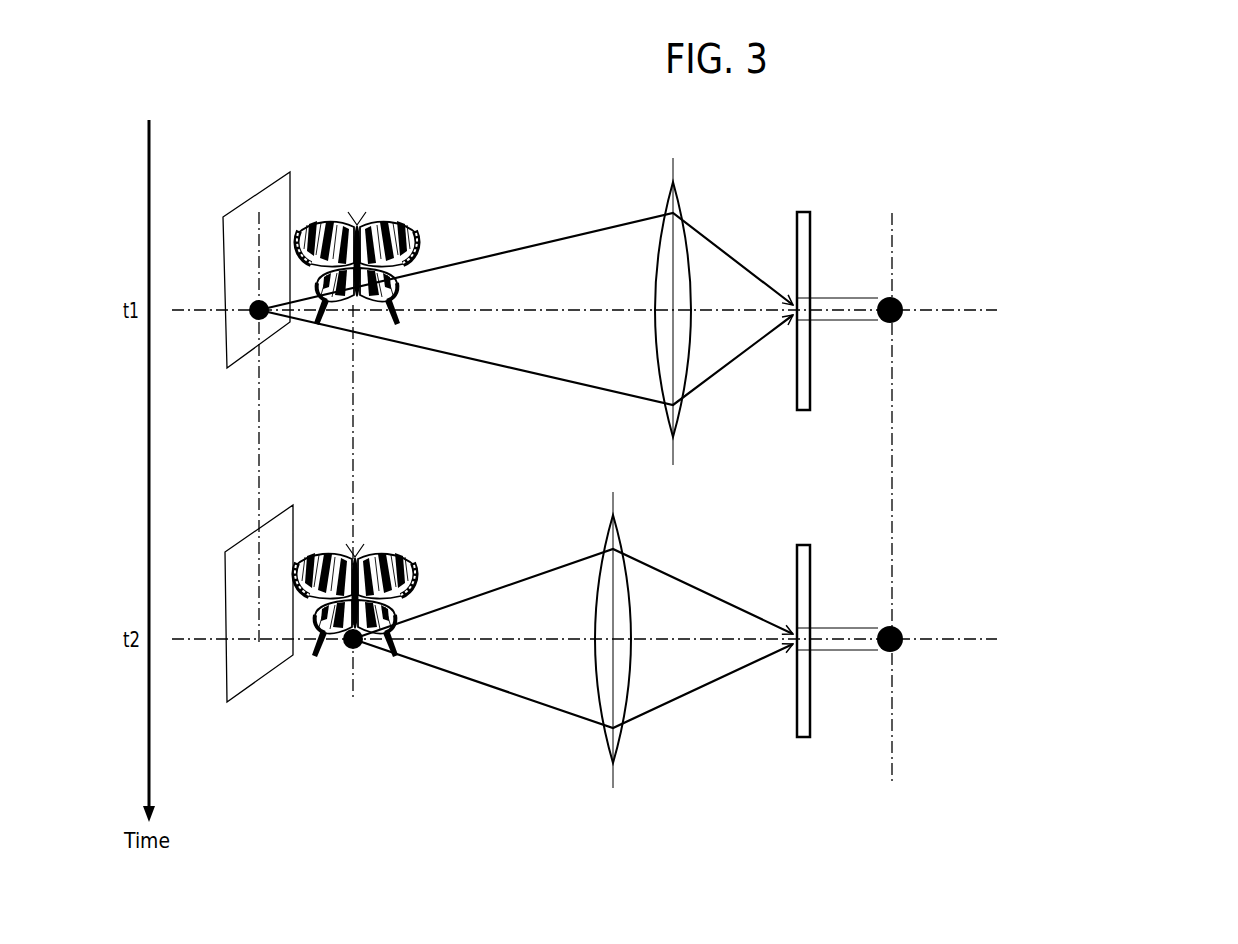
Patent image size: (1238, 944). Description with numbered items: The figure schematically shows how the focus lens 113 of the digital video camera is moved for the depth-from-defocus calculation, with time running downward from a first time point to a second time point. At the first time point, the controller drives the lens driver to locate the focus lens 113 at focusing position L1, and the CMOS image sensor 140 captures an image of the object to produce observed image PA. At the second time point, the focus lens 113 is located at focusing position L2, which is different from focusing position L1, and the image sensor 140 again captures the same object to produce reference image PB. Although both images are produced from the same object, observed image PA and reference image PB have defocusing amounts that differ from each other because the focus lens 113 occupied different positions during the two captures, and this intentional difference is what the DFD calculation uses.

The focus lens 113 is at (651, 470).
The CMOS image sensor 140 is at (802, 210).
The focusing position L1 is at (673, 328).
The focusing position L2 is at (613, 656).
The observed image PA is at (1033, 308).
The reference image PB is at (1037, 637).